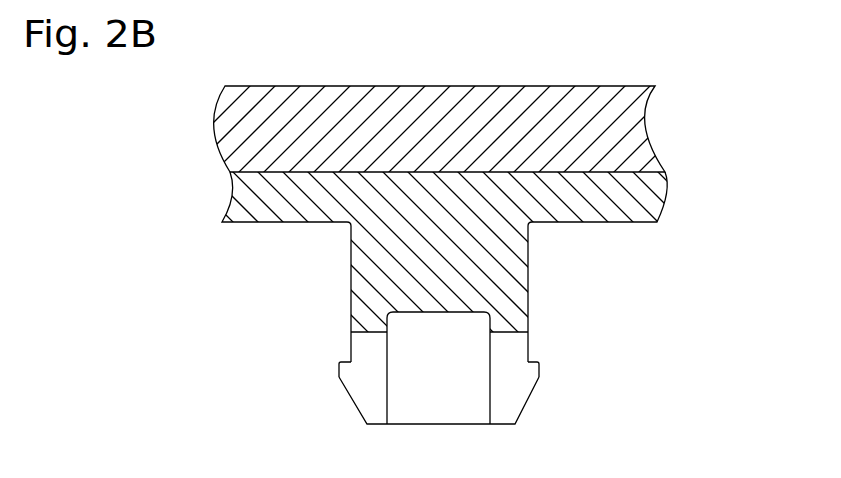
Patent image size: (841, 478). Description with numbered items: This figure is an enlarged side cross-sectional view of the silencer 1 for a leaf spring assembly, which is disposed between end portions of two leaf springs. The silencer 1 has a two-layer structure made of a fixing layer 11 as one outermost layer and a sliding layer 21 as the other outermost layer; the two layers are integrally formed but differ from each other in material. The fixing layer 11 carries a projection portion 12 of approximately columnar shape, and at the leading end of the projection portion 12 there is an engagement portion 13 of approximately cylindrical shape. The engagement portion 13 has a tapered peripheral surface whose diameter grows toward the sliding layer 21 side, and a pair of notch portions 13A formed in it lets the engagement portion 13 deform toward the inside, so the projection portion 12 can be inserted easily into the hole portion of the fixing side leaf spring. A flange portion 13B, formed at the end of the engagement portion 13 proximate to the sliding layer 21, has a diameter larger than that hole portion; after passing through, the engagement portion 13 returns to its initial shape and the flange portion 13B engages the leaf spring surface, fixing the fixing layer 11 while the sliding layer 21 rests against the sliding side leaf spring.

The silencer 1 is at (677, 87).
The sliding layer 21 is at (233, 117).
The fixing layer 11 is at (240, 190).
The projection portion 12 is at (508, 312).
The engagement portion 13 is at (345, 403).
The notch portions 13A is at (512, 390).
The flange portion 13B is at (539, 370).